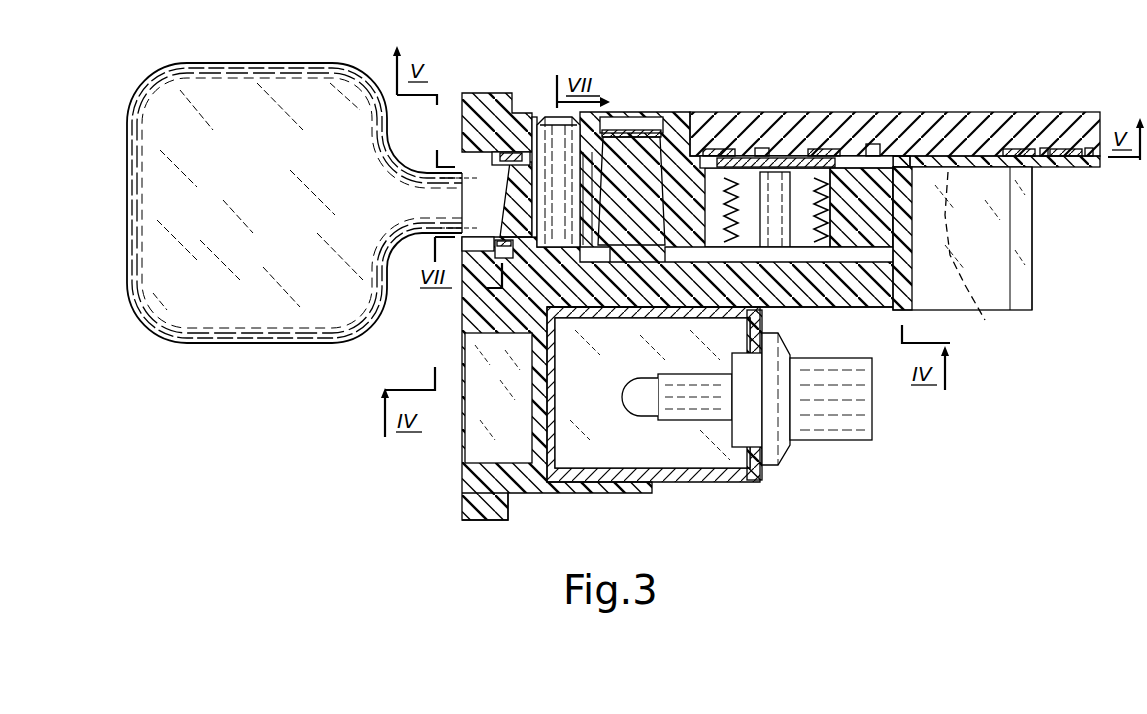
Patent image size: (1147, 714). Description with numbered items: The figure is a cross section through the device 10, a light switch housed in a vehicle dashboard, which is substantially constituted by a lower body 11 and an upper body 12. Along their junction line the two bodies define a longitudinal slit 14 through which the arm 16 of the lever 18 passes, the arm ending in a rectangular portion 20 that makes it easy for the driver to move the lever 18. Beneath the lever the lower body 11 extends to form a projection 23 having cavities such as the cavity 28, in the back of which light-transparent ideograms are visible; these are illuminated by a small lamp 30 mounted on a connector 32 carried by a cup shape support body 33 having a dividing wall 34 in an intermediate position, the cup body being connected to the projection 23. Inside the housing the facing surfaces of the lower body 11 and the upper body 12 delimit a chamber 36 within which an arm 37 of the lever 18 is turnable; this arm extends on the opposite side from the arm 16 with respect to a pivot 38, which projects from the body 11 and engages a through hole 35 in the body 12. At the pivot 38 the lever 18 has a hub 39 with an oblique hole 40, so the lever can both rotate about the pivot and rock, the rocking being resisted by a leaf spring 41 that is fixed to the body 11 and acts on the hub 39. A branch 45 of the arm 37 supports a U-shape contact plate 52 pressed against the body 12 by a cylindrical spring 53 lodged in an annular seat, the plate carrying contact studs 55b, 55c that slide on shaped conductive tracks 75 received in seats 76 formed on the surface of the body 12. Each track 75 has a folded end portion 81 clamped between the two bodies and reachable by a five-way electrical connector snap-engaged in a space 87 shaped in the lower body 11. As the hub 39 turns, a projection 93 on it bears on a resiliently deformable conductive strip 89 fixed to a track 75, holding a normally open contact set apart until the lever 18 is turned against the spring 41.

The device 10 is at (458, 533).
The lower body 11 is at (852, 290).
The upper body 12 is at (937, 137).
The longitudinal slit 14 is at (462, 246).
The arm 16 is at (445, 178).
The lever 18 is at (186, 347).
The rectangular portion 20 is at (265, 305).
The projection 23 is at (480, 497).
The cavity 28 is at (505, 402).
The small lamp 30 is at (640, 397).
The connector 32 is at (788, 450).
The cup shape support body 33 is at (740, 489).
The dividing wall 34 is at (597, 445).
The through hole 35 is at (535, 112).
The chamber 36 is at (790, 258).
The arm 37 is at (706, 300).
The pivot 38 is at (558, 152).
The hub 39 is at (520, 150).
The oblique hole 40 is at (527, 244).
The leaf spring 41 is at (506, 258).
The branch 45 is at (905, 150).
The U-shape contact plate 52 is at (782, 165).
The cylindrical spring 53 is at (740, 157).
The contact stud 55b is at (730, 152).
The contact stud 55c is at (835, 150).
The conductive track 75 is at (715, 140).
The seat 76 is at (763, 145).
The end portion 81 is at (967, 259).
The space 87 is at (995, 270).
The conductive strip 89 is at (627, 130).
The projection 93 is at (643, 143).